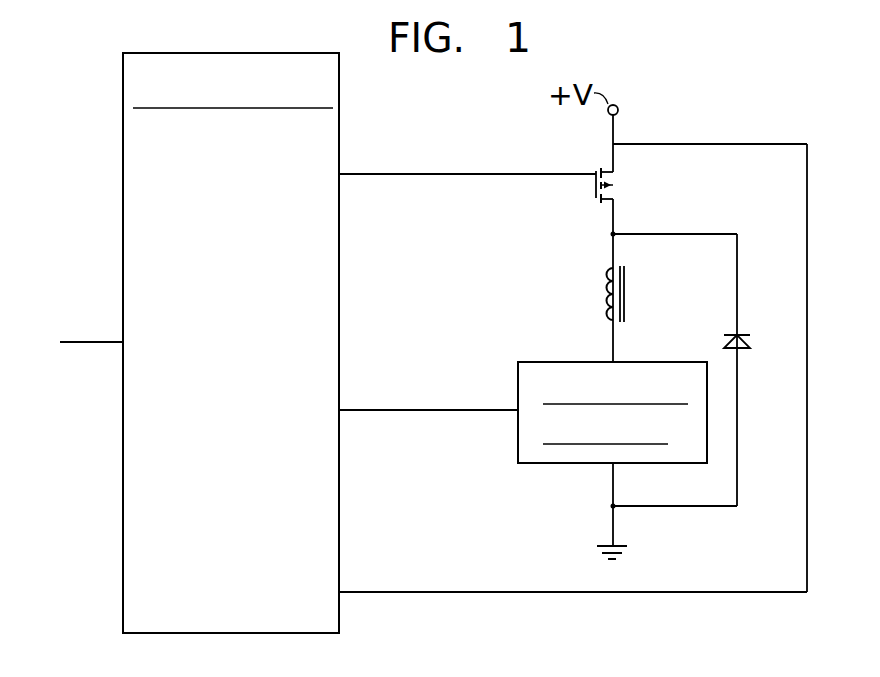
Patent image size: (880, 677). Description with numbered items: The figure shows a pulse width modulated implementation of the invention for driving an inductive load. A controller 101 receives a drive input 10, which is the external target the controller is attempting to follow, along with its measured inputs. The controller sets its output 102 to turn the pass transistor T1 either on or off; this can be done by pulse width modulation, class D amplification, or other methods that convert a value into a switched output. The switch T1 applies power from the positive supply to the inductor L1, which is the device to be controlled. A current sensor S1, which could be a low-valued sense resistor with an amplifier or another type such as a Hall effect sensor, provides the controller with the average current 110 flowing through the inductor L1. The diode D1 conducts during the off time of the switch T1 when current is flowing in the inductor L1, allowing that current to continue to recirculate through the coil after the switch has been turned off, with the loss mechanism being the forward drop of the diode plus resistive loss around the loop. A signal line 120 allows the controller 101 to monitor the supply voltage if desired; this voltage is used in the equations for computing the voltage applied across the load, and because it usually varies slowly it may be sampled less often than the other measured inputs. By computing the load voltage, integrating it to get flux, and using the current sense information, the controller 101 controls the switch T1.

The drive input 10 is at (122, 341).
The controller 101 is at (266, 53).
The output 102 is at (342, 173).
The average current 110 is at (343, 409).
The signal line 120 is at (343, 591).
The pass transistor T1 is at (613, 178).
The inductor L1 is at (629, 283).
The diode D1 is at (740, 335).
The current sensor S1 is at (558, 362).